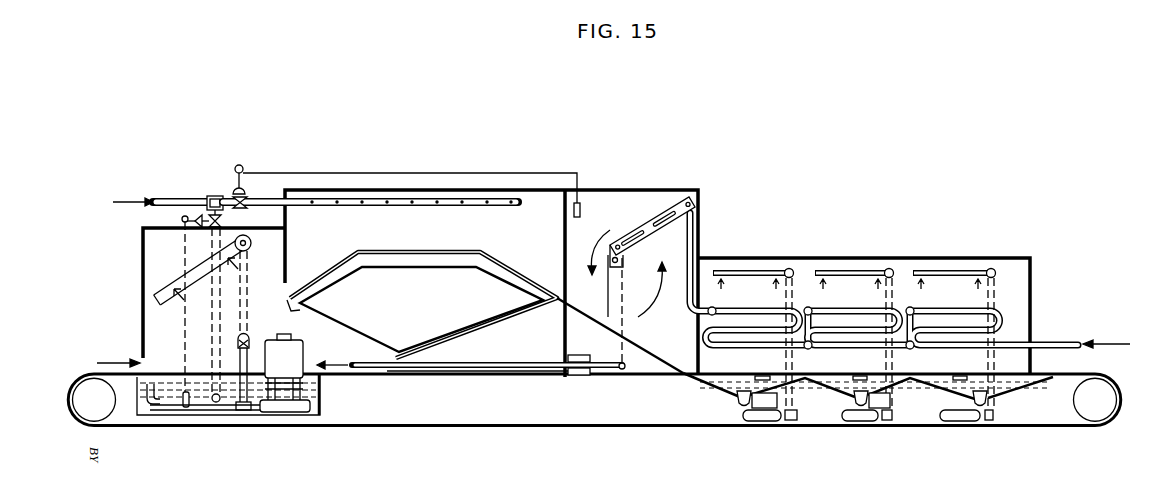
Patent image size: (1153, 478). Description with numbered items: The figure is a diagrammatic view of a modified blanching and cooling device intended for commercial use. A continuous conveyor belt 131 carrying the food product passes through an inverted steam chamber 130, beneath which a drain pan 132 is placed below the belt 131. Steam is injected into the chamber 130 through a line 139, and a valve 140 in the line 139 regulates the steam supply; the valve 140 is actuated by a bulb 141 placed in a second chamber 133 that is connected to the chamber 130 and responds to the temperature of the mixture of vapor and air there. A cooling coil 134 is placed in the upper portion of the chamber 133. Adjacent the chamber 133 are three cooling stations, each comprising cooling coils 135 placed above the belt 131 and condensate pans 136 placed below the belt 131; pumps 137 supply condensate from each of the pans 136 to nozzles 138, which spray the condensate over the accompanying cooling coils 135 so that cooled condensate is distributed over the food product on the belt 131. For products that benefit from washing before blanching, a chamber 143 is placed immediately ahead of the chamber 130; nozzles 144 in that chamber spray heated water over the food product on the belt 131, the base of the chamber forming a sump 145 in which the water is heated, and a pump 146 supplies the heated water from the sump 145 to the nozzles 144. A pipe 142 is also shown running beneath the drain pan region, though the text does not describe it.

The inverted steam chamber 130 is at (437, 188).
The continuous conveyor belt 131 is at (378, 246).
The drain pan 132 is at (377, 268).
The second chamber 133 is at (620, 189).
The cooling coil 134 is at (650, 221).
The cooling coils 135 is at (745, 301).
The condensate pans 136 is at (718, 392).
The pumps 137 is at (763, 421).
The nozzles 138 is at (758, 270).
The line 139 is at (270, 207).
The valve 140 is at (237, 199).
The bulb 141 is at (577, 217).
The return pipe 142 is at (500, 369).
The chamber 143 is at (142, 295).
The nozzles 144 is at (157, 306).
The sump 145 is at (192, 407).
The pump 146 is at (279, 413).